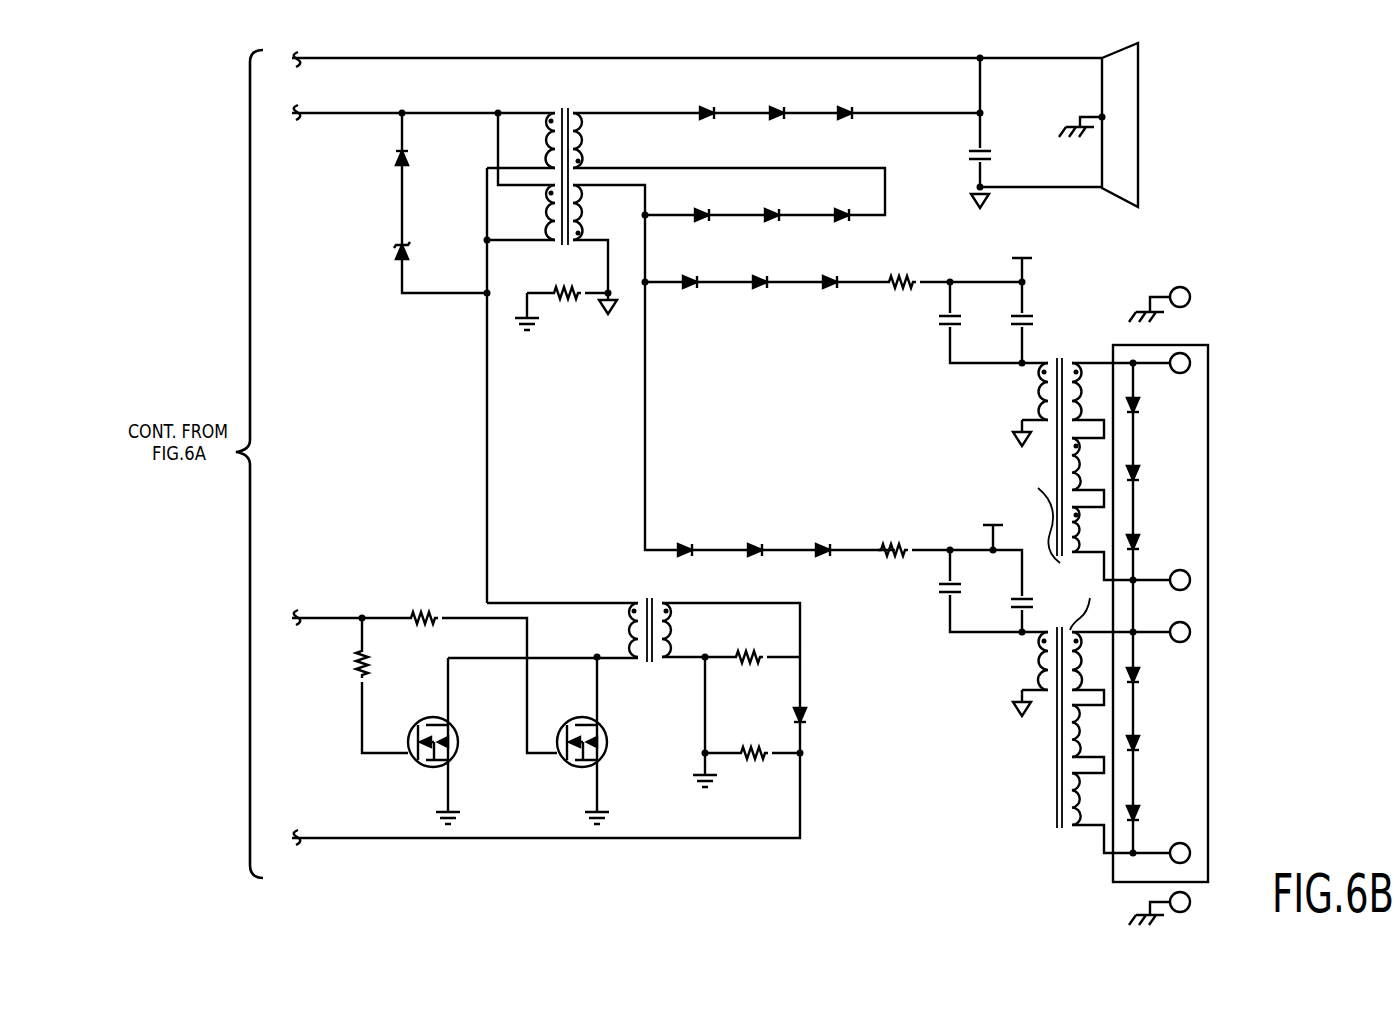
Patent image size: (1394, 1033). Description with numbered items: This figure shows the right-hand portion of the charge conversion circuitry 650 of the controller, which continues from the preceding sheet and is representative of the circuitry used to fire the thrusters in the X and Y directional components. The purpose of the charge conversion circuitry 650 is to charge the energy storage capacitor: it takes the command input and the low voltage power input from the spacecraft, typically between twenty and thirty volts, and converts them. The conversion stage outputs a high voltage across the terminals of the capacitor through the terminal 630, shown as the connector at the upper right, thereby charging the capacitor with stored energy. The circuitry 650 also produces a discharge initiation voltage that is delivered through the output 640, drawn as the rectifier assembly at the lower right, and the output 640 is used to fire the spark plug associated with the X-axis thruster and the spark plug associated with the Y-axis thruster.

The terminal 630 is at (1124, 47).
The output 640 is at (1115, 870).
The charge conversion circuitry 650 is at (420, 441).